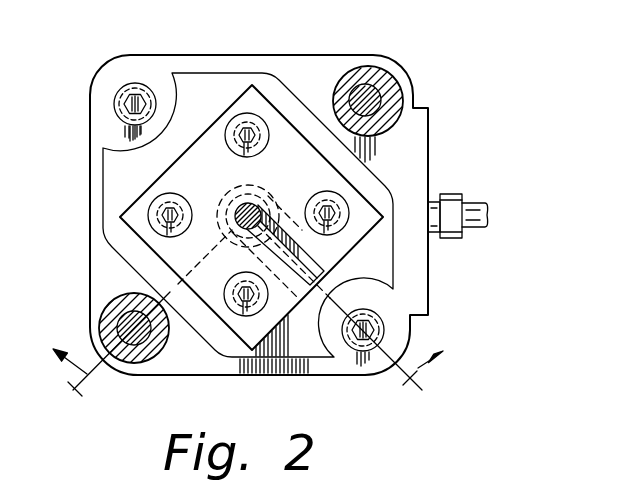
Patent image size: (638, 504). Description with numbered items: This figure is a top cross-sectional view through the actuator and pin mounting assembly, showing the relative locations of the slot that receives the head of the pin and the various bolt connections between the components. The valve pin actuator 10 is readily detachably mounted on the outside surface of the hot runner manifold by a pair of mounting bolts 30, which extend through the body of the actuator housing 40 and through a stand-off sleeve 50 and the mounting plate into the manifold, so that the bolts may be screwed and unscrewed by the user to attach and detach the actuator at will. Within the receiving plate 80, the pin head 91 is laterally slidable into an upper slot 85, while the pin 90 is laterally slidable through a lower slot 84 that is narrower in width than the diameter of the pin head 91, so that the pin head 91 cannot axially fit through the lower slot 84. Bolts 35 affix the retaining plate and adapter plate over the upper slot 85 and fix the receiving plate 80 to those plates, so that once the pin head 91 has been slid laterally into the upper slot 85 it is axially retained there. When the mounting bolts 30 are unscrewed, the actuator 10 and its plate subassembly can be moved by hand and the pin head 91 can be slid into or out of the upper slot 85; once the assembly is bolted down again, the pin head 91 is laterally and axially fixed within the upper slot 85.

The valve pin actuator 10 is at (455, 101).
The mounting bolts 30 is at (357, 90).
The bolts 35 is at (269, 136).
The actuator housing 40 is at (90, 125).
The stand-off sleeve 50 is at (382, 80).
The receiving plate 80 is at (115, 244).
The lower slot 84 is at (318, 283).
The upper slot 85 is at (320, 256).
The pin 90 is at (240, 205).
The pin head 91 is at (226, 199).